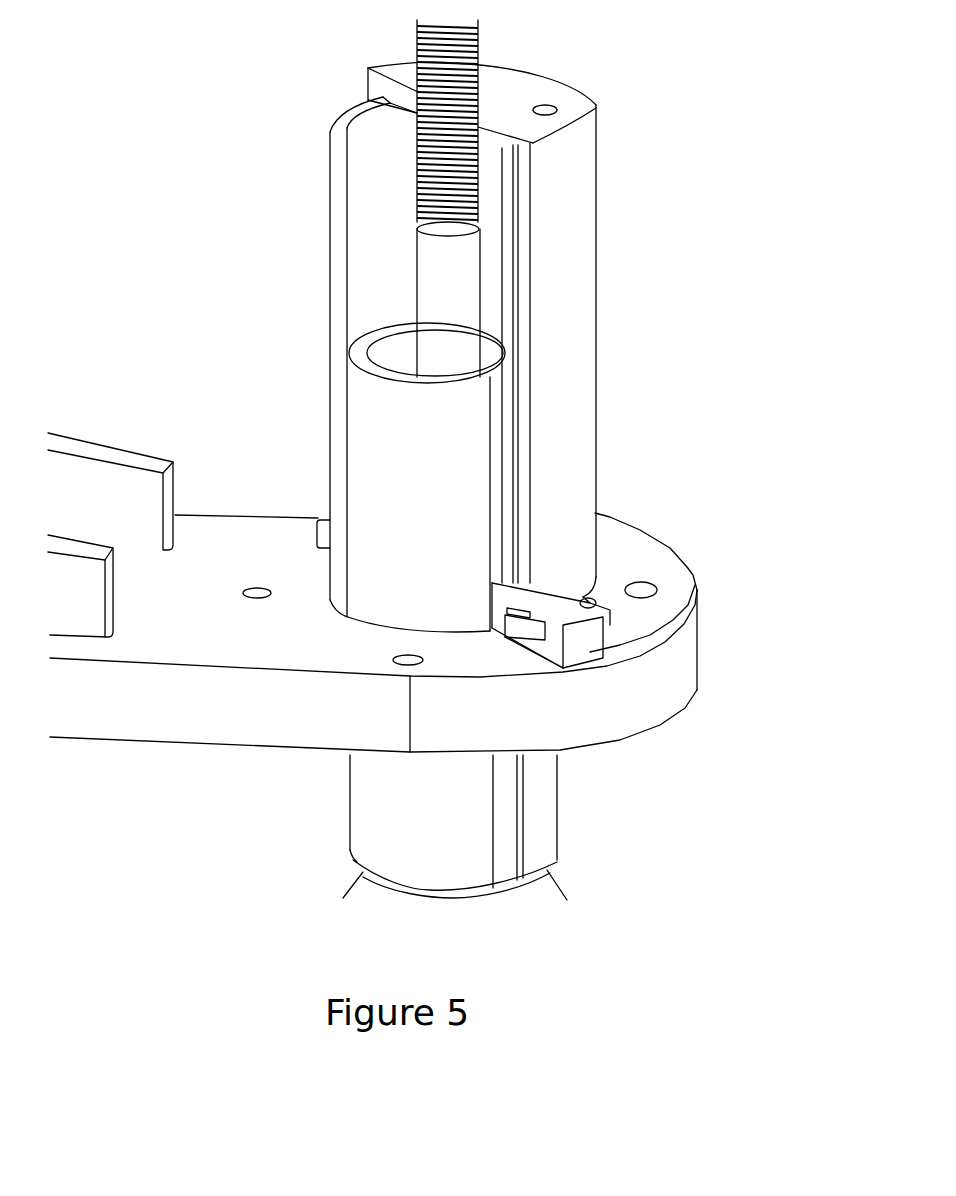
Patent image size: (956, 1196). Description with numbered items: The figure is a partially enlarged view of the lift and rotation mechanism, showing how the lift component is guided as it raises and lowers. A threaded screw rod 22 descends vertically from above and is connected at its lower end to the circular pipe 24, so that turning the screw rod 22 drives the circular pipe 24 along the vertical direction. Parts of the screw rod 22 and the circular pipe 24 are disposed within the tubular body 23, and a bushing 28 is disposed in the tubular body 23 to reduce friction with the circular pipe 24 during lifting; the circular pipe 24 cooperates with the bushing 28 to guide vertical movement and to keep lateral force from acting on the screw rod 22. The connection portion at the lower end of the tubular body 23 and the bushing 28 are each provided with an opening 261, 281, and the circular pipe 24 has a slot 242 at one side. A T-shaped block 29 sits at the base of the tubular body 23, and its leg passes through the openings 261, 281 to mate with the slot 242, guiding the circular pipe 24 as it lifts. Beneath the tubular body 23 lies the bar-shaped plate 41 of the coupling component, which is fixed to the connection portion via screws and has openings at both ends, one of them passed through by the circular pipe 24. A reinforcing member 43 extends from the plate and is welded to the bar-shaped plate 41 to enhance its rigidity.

The screw rod 22 is at (327, 237).
The tubular body 23 is at (577, 387).
The circular pipe 24 is at (375, 472).
The bushing 28 is at (443, 290).
The T-shaped block 29 is at (700, 610).
The bar-shaped plate 41 is at (577, 705).
The reinforcing member 43 is at (110, 483).
The slot 242 is at (498, 482).
The opening 261 is at (527, 540).
The opening 281 is at (507, 500).